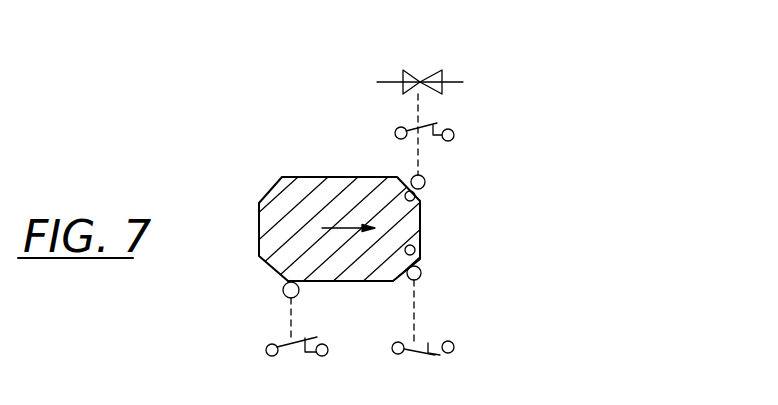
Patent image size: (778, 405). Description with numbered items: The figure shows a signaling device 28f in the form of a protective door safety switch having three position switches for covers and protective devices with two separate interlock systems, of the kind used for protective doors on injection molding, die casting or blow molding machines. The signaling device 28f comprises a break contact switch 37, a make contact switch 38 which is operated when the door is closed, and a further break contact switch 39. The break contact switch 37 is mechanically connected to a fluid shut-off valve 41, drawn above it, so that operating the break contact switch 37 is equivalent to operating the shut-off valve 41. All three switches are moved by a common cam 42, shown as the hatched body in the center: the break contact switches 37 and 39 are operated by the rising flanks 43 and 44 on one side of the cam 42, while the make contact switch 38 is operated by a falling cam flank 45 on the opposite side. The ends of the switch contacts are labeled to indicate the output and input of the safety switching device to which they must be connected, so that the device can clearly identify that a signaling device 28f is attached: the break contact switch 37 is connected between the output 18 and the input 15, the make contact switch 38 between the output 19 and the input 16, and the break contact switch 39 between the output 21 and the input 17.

The signaling device 28f is at (556, 200).
The fluid shut-off valve 41 is at (412, 70).
The common cam 42 is at (273, 185).
The rising flank 43 is at (420, 201).
The rising flank 44 is at (420, 240).
The falling cam flank 45 is at (272, 267).
The output 18 is at (395, 130).
The input 15 is at (453, 130).
The break contact switch 37 is at (437, 137).
The output 19 is at (268, 357).
The input 16 is at (320, 357).
The make contact switch 38 is at (287, 345).
The output 21 is at (400, 353).
The input 17 is at (453, 350).
The break contact switch 39 is at (438, 342).